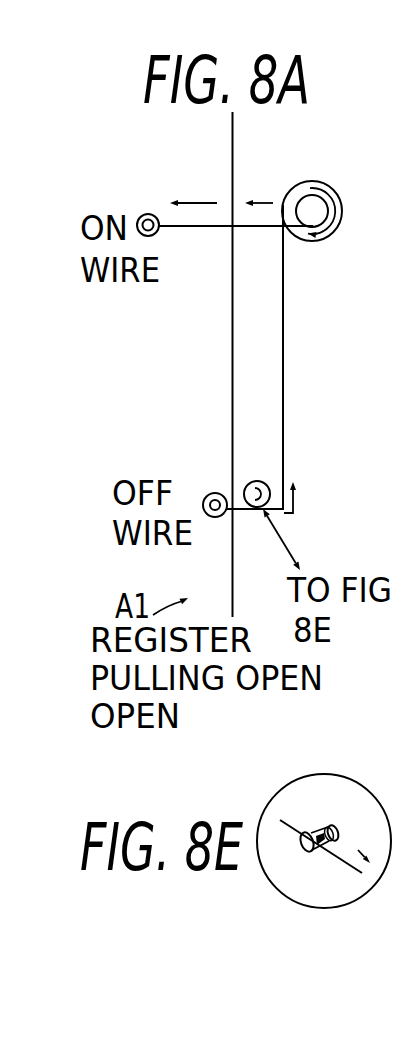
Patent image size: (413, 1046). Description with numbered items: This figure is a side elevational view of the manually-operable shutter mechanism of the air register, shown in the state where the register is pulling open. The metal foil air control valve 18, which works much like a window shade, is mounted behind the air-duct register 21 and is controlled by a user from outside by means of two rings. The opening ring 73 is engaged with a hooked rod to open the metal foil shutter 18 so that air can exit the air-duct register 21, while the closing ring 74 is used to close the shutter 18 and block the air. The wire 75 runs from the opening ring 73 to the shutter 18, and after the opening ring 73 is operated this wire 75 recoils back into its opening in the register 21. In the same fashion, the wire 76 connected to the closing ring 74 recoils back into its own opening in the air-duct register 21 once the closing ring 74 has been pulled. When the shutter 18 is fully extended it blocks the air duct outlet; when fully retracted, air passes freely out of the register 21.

The metal foil air control valve 18 is at (283, 297).
The air-duct register 21 is at (229, 393).
The opening ring 73 is at (140, 218).
The closing ring 74 is at (215, 518).
The wire 75 is at (202, 228).
The wire 76 is at (245, 510).